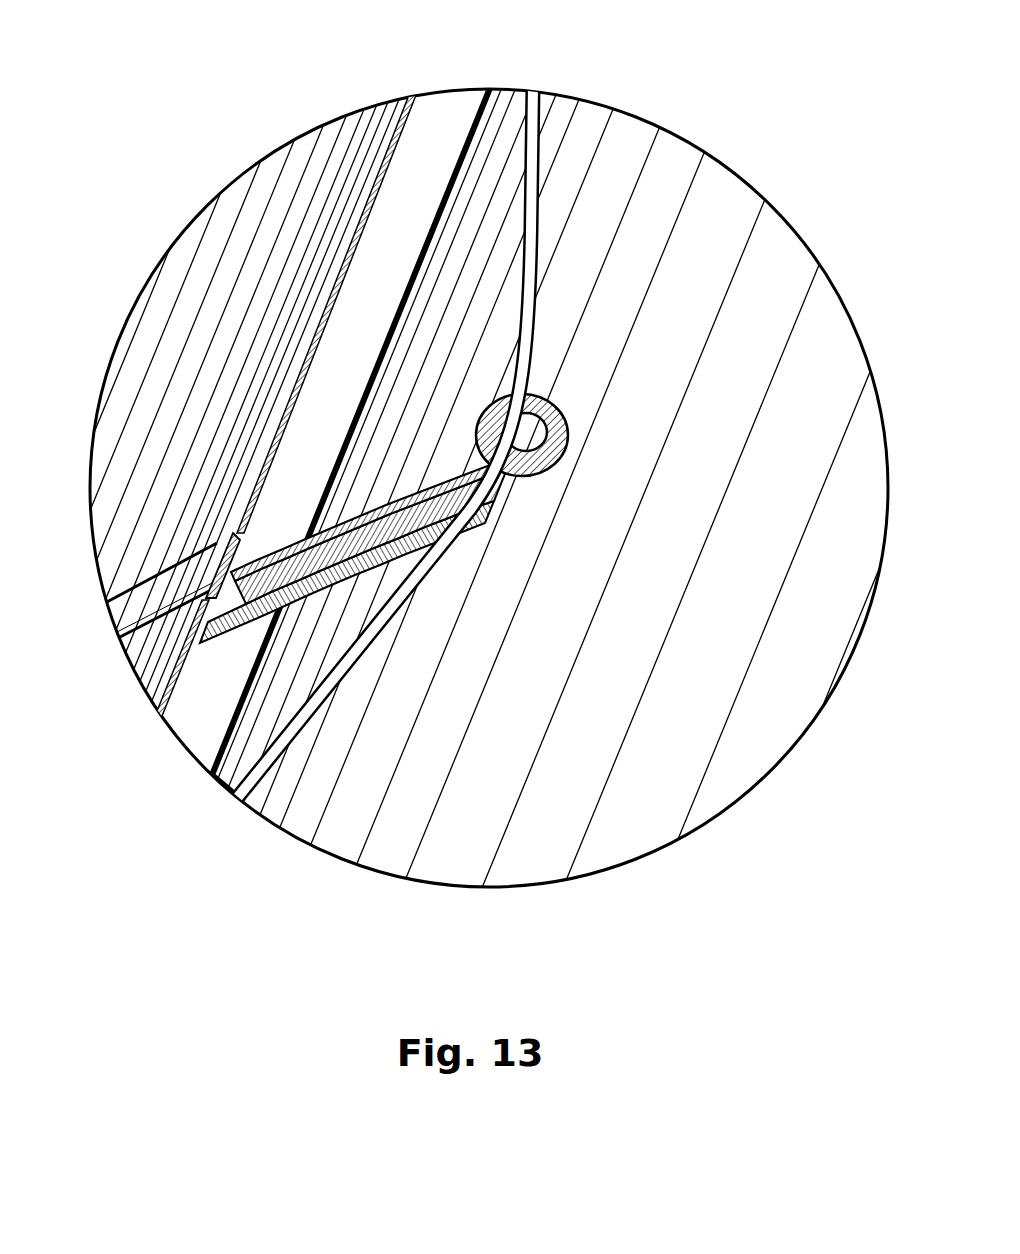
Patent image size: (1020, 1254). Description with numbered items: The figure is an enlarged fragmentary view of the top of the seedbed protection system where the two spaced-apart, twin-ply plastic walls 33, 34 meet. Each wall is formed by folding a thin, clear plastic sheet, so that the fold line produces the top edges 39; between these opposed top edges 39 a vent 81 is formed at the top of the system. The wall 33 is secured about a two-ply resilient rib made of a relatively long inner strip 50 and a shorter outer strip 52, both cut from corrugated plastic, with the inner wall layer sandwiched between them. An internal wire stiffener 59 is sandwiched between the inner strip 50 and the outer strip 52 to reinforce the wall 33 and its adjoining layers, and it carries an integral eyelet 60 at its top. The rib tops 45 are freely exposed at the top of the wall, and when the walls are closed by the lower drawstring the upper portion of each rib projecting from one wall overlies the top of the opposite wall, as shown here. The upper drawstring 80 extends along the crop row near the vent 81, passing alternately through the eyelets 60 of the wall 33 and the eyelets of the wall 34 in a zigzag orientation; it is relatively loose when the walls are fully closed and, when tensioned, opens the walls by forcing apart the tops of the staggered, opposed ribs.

The wall 33 is at (112, 420).
The wall 34 is at (634, 829).
The top edges 39 is at (337, 295).
The rib tops 45 is at (479, 548).
The inner strip 50 is at (224, 648).
The outer strip 52 is at (143, 612).
The stiffener 59 is at (257, 562).
The eyelet 60 is at (557, 473).
The upper drawstring 80 is at (538, 338).
The vent 81 is at (456, 102).